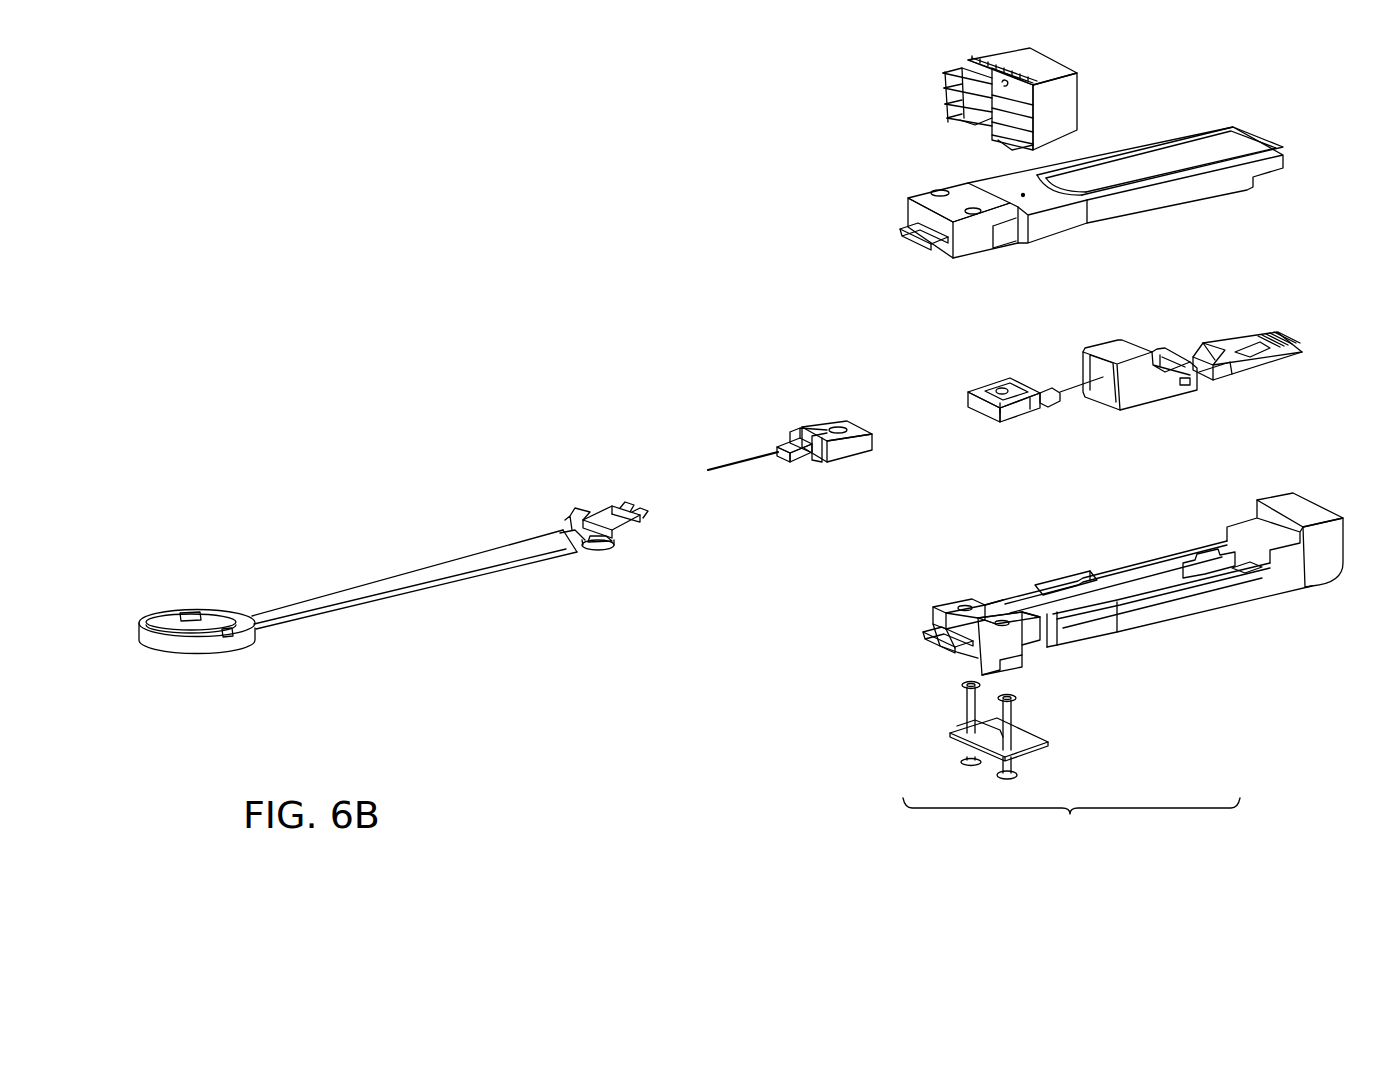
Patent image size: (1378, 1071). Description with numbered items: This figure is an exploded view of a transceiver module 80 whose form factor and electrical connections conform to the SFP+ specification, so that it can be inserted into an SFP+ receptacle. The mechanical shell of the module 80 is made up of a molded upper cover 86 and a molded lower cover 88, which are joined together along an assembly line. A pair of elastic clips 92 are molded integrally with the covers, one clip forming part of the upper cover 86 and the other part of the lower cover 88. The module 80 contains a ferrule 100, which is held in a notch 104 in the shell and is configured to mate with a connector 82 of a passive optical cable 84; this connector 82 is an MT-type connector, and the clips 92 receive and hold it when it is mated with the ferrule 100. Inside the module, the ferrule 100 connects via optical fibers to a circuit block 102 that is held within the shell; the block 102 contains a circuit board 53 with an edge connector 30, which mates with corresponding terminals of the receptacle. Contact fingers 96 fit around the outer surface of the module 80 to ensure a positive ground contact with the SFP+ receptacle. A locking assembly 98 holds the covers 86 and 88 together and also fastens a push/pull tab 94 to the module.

The edge connector 30 is at (1298, 336).
The circuit board 53 is at (1208, 341).
The transceiver module 80 is at (1071, 822).
The connector 82 is at (826, 424).
The passive optical cable 84 is at (716, 466).
The upper cover 86 is at (920, 197).
The lower cover 88 is at (1020, 653).
The elastic clips 92 is at (902, 237).
The push/pull tab 94 is at (461, 557).
The contact fingers 96 is at (1080, 87).
The locking assembly 98 is at (957, 748).
The ferrule 100 is at (986, 385).
The circuit block 102 is at (1102, 345).
The notch 104 is at (978, 612).